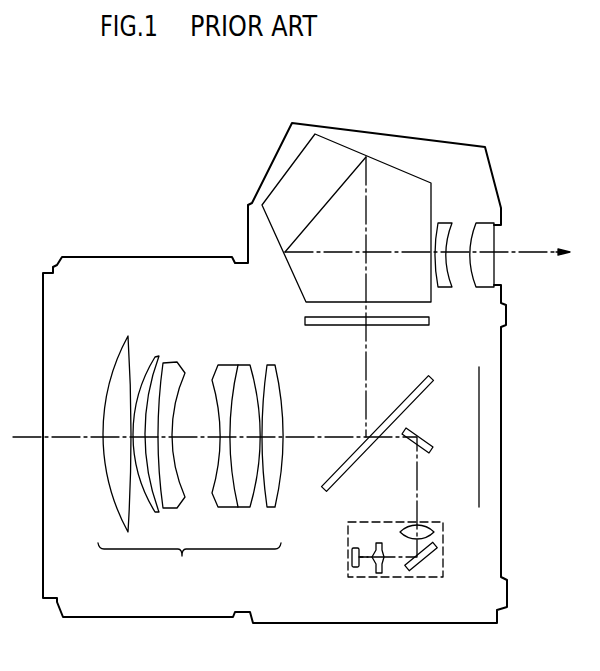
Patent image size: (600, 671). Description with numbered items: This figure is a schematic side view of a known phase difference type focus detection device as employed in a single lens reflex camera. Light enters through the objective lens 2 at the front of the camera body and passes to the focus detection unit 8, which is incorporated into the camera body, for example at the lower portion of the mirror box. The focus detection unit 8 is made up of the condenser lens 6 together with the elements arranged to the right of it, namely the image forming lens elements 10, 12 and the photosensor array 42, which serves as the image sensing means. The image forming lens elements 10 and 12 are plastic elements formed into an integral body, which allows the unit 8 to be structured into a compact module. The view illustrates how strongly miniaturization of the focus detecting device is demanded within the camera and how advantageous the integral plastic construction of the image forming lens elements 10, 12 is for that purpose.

The objective lens 2 is at (182, 556).
The condenser lens 6 is at (423, 524).
The focus detection unit 8 is at (443, 548).
The image forming lens element 10 is at (402, 579).
The image forming lens element 12 is at (380, 573).
The photosensor array 42 is at (358, 567).